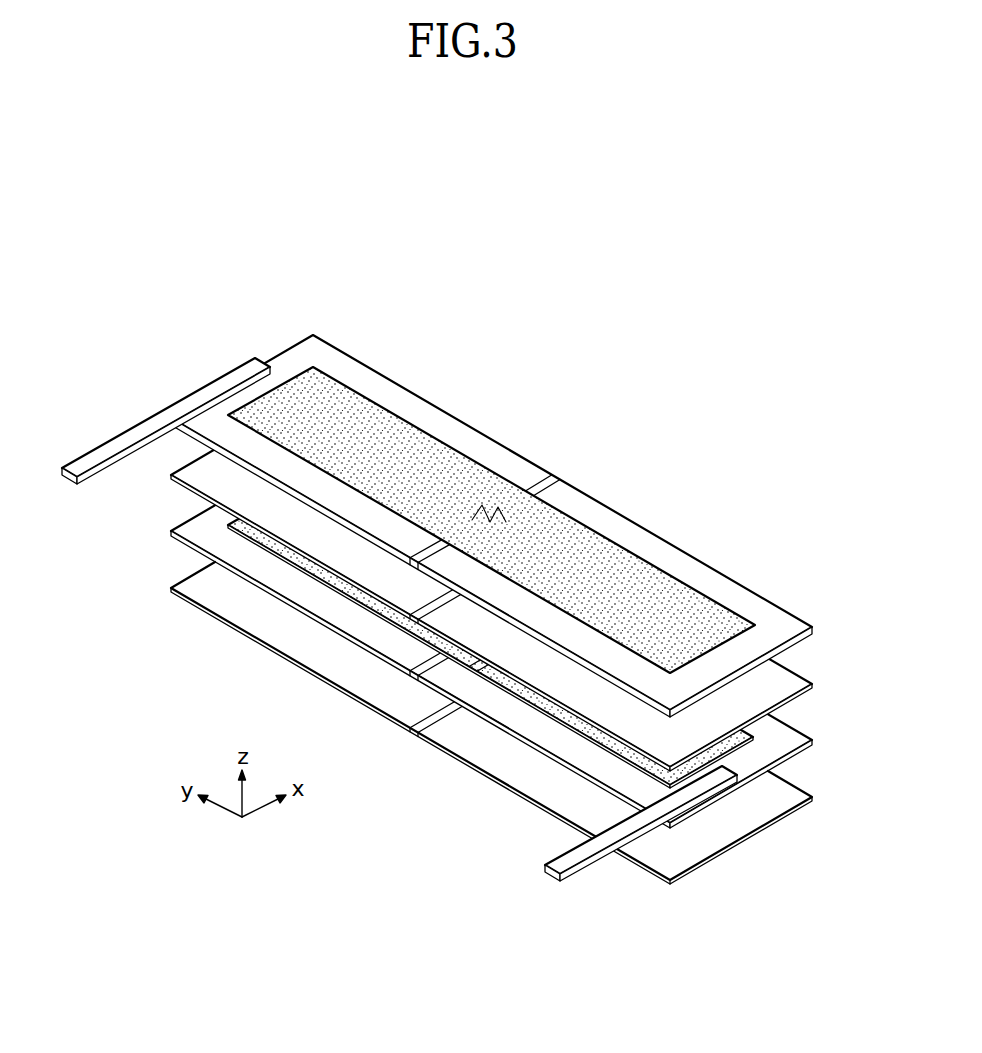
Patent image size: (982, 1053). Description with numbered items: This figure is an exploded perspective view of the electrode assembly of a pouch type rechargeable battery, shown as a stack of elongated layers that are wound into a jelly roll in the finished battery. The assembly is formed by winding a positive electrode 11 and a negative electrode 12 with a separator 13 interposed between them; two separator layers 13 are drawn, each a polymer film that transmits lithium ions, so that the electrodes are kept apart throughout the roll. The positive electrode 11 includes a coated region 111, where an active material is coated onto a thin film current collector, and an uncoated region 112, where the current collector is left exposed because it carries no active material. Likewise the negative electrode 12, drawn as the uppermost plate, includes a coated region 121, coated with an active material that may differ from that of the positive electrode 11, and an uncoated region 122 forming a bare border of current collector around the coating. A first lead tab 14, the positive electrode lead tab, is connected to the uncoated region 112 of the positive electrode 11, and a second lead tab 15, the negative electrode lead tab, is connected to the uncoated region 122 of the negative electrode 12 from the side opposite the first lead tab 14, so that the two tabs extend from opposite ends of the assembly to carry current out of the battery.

The positive electrode 11 is at (516, 674).
The coated region 111 is at (723, 750).
The uncoated region 112 is at (777, 745).
The negative electrode 12 is at (491, 489).
The coated region 121 is at (353, 410).
The uncoated region 122 is at (397, 398).
The separator 13 is at (197, 477).
The first lead tab 14 is at (575, 853).
The second lead tab 15 is at (118, 448).